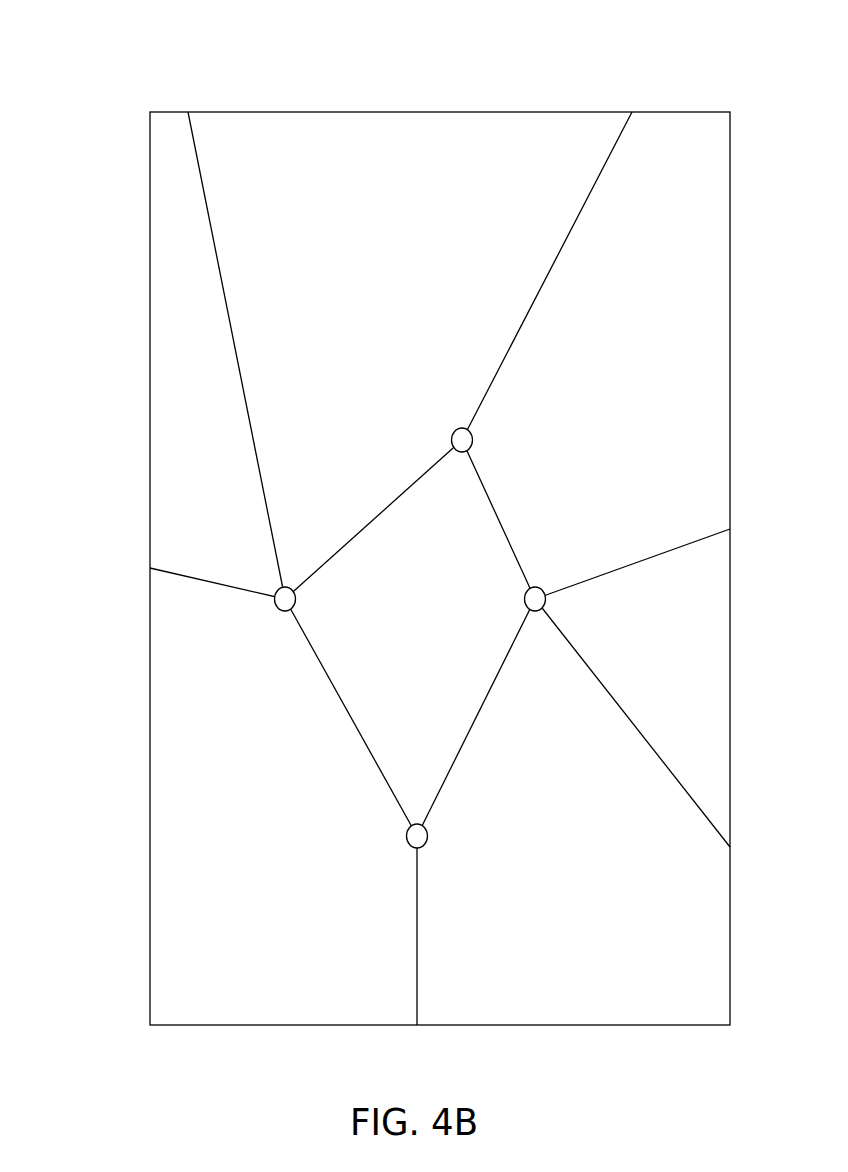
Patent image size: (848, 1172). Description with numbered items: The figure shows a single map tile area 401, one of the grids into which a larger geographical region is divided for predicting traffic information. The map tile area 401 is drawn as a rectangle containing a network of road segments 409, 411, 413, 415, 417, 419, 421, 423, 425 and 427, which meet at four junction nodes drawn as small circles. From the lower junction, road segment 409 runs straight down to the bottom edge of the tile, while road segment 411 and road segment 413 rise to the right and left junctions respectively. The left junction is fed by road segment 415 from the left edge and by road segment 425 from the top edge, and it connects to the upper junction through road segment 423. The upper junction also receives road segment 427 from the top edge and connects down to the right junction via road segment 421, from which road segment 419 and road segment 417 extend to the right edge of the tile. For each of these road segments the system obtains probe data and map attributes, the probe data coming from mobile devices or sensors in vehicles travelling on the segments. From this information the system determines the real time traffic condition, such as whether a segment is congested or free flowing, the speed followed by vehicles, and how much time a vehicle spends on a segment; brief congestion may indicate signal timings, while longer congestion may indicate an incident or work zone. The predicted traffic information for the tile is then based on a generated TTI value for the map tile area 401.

The map tile area 401 is at (160, 52).
The road segment 409 is at (418, 936).
The road segment 411 is at (480, 716).
The road segment 413 is at (351, 710).
The road segment 415 is at (212, 581).
The road segment 417 is at (632, 727).
The road segment 419 is at (634, 563).
The road segment 421 is at (502, 519).
The road segment 423 is at (374, 517).
The road segment 425 is at (236, 353).
The road segment 427 is at (551, 268).